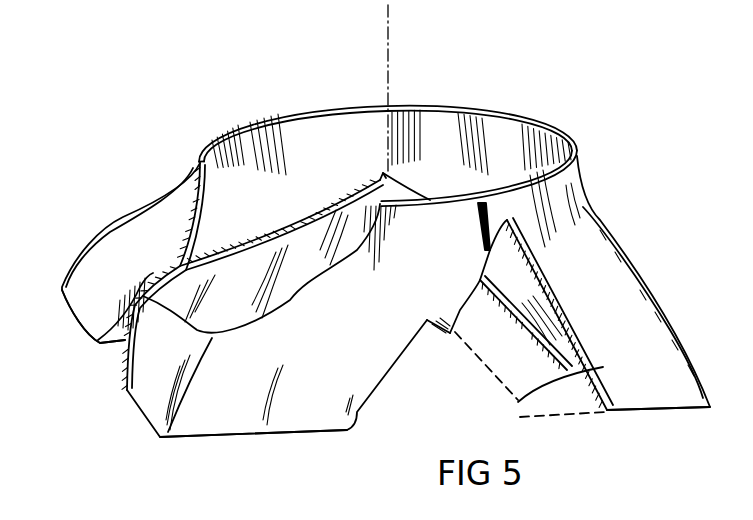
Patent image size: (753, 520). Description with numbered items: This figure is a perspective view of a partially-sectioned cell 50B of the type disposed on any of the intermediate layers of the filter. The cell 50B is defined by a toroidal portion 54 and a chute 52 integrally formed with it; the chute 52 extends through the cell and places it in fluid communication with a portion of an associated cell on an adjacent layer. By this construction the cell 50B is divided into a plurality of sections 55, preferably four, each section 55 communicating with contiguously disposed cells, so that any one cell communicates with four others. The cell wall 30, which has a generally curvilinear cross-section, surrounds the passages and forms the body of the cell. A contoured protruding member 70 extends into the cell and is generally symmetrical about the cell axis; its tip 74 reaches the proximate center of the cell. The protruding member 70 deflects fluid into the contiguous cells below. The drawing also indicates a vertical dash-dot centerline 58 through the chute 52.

The cell disposed on intermediate layer 50B is at (215, 141).
The chute 52 is at (502, 133).
The toroidal portion 54 is at (590, 119).
The sections 55 is at (90, 338).
The axis of rotation 58 is at (388, 72).
The protruding member 70 is at (372, 202).
The tip 74 is at (380, 172).
The wall 30 is at (612, 267).